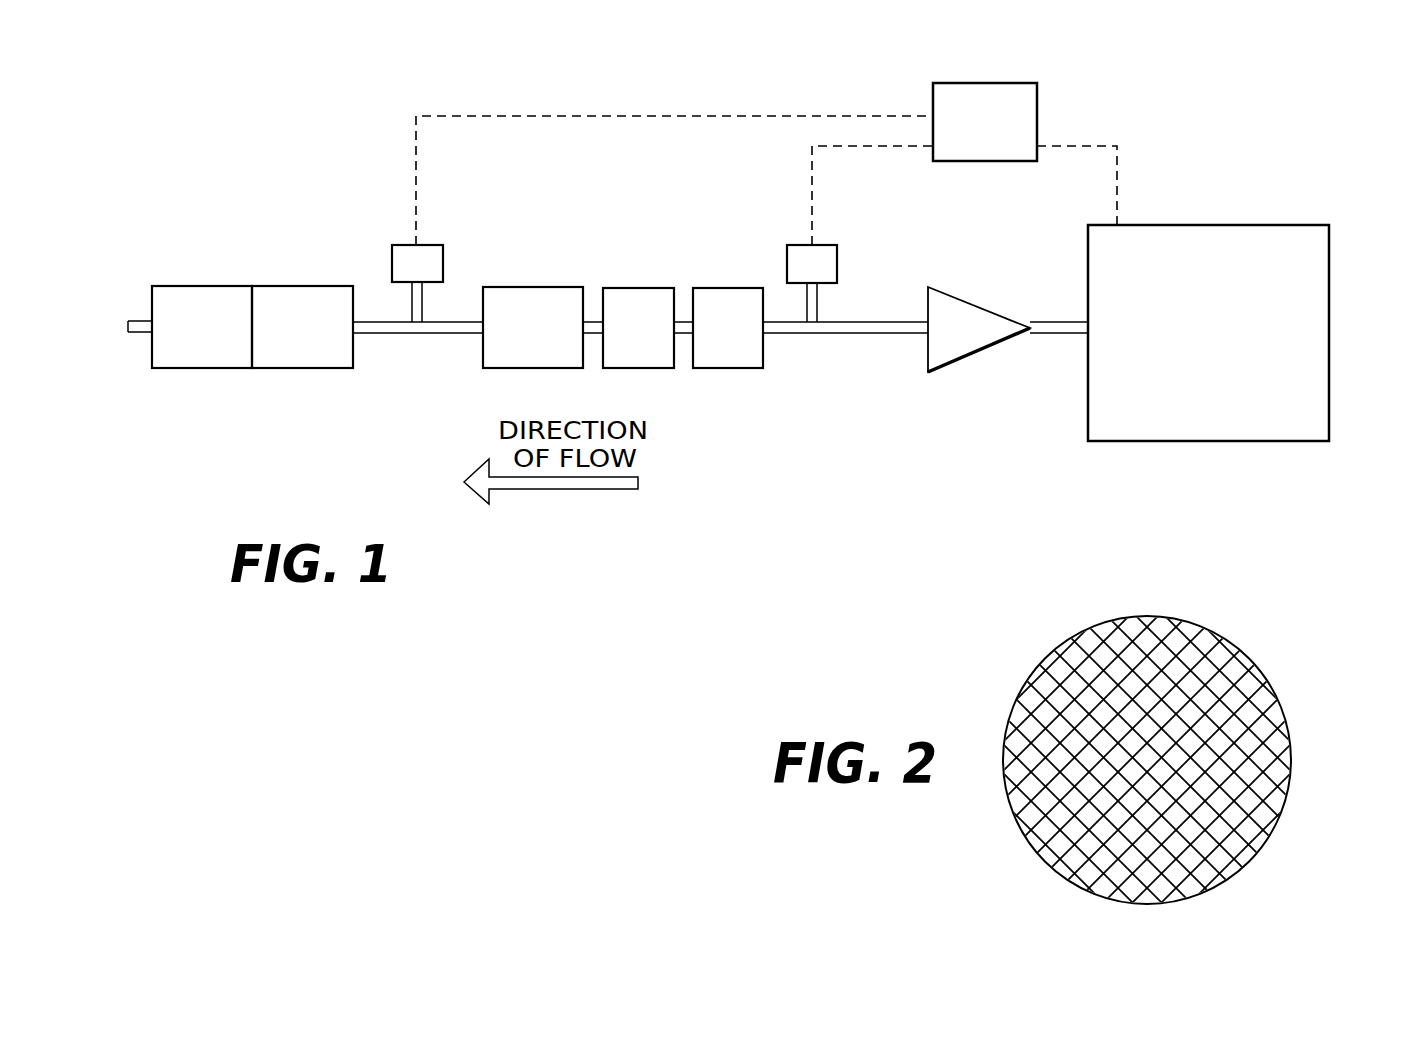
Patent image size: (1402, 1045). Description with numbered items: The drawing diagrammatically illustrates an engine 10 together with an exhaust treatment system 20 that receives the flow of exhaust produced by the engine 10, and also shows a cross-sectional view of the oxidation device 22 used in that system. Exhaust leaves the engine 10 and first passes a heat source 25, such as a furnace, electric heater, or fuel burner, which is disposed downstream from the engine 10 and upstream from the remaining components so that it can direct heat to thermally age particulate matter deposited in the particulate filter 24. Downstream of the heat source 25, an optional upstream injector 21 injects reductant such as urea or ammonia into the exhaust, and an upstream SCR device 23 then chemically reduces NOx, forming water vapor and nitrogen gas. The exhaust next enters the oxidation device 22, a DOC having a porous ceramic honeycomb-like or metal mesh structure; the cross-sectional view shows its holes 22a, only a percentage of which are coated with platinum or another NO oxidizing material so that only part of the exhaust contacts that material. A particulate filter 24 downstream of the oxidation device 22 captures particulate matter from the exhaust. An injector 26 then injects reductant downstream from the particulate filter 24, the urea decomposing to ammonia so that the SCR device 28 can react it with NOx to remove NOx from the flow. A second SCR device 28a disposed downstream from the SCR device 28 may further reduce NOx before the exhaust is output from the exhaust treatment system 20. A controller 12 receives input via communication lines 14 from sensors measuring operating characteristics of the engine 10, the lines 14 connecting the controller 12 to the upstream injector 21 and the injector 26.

In FIG. 1, the engine 10 is at (1195, 225).
In FIG. 1, the controller 12 is at (978, 83).
In FIG. 1, the communication lines 14 is at (680, 115).
In FIG. 1, the exhaust treatment system 20 is at (368, 112).
In FIG. 1, the upstream injector 21 is at (837, 262).
In FIG. 1, the oxidation device 22 is at (633, 288).
In FIG. 2, the oxidation device 22 is at (1187, 620).
In FIG. 2, the holes 22a is at (1248, 838).
In FIG. 1, the upstream SCR device 23 is at (722, 288).
In FIG. 1, the particulate filter 24 is at (522, 287).
In FIG. 1, the heat source 25 is at (975, 305).
In FIG. 1, the injector 26 is at (440, 245).
In FIG. 1, the SCR device 28 is at (298, 286).
In FIG. 1, the second SCR device 28a is at (200, 286).